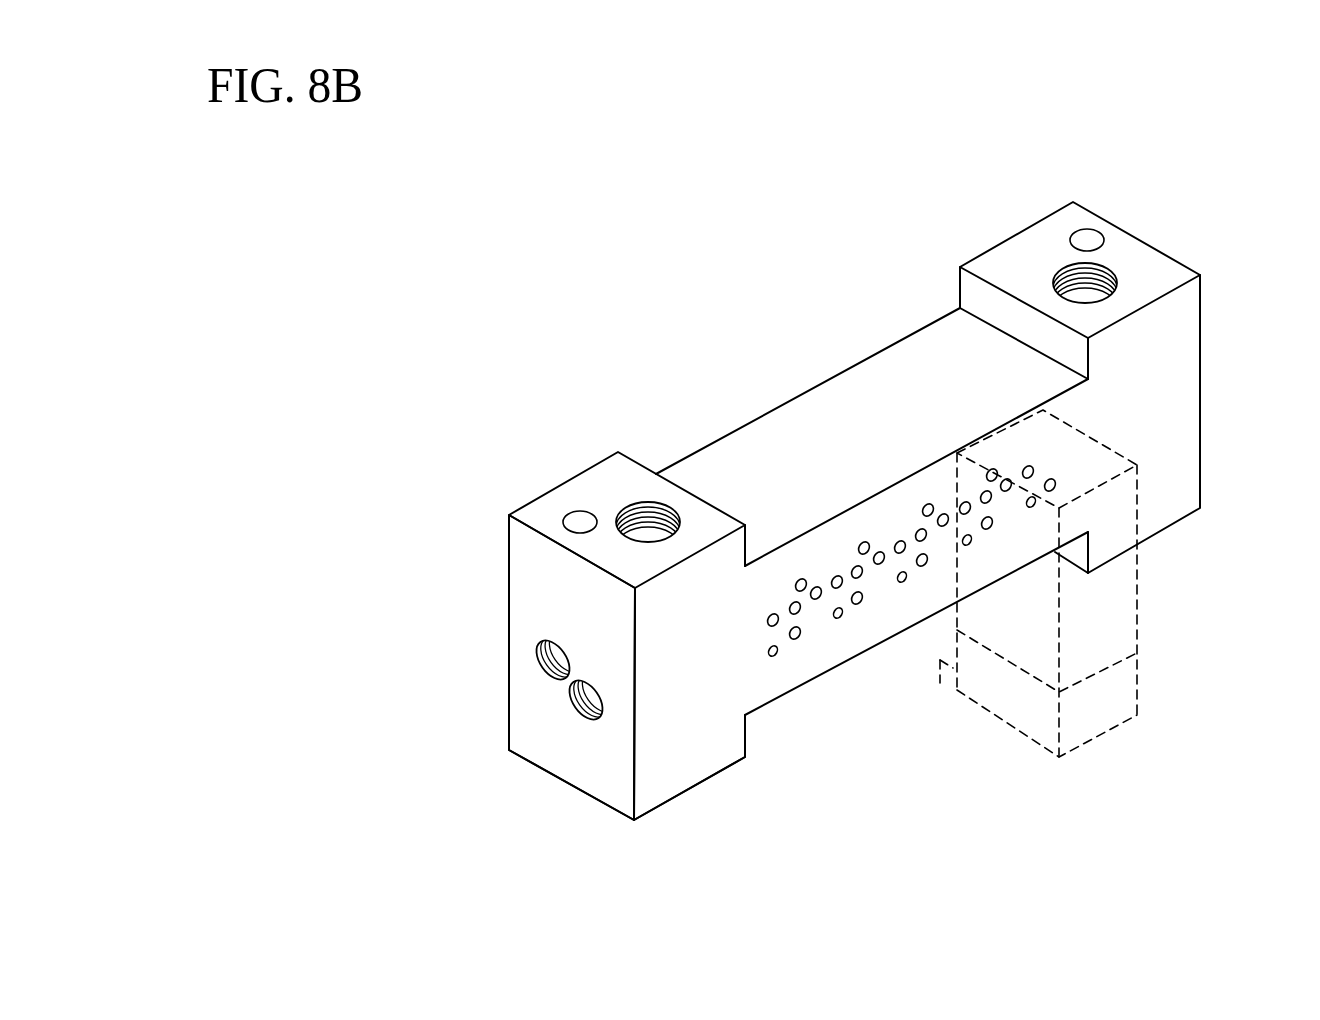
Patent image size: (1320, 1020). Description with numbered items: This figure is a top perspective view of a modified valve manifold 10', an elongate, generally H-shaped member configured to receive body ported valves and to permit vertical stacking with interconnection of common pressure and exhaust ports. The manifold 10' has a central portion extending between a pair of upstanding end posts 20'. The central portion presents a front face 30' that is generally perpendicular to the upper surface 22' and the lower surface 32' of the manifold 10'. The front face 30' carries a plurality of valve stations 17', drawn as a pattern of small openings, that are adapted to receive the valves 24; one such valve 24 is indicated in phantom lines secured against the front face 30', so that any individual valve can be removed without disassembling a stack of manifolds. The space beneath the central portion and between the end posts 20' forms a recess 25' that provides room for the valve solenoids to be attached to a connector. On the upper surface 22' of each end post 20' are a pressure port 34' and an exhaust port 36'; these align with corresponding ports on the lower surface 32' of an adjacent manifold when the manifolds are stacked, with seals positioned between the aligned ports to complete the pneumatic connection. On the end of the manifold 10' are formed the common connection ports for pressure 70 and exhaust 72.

The manifold 10' is at (517, 641).
The end posts 20' is at (967, 547).
The upper surface 22' is at (849, 370).
The valves 24 is at (1135, 608).
The recess 25' is at (916, 659).
The front face 30' is at (872, 537).
The lower surface 32' is at (627, 829).
The pressure port 34' is at (626, 474).
The exhaust port 36' is at (1061, 232).
The common pressure connection port 70 is at (582, 705).
The common exhaust connection port 72 is at (552, 659).
The valve stations 17' is at (911, 592).